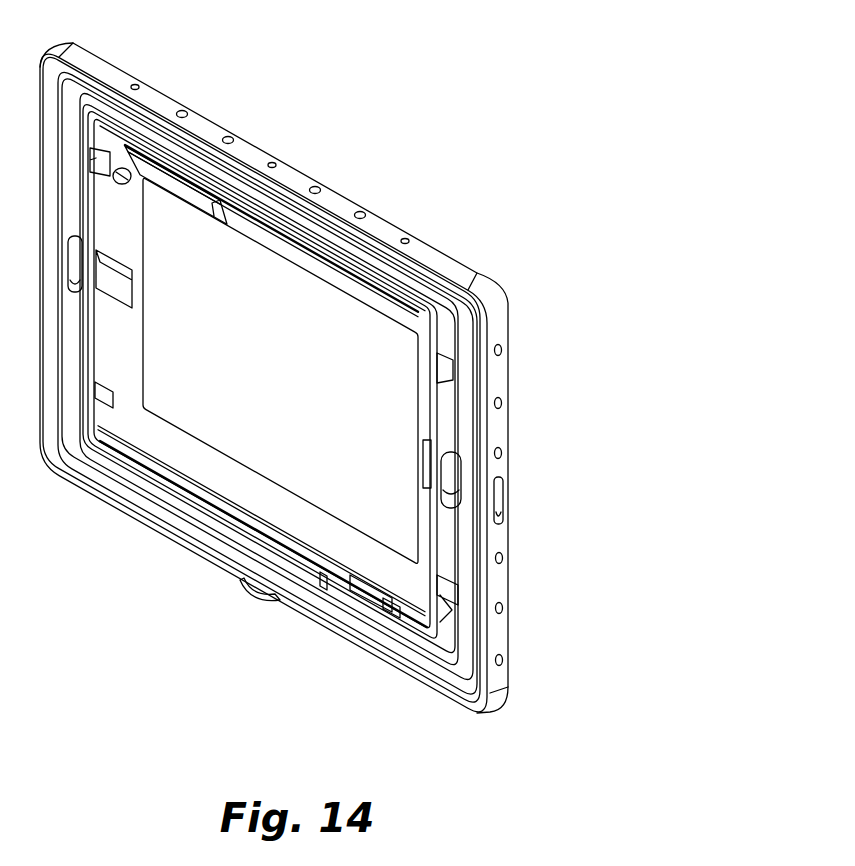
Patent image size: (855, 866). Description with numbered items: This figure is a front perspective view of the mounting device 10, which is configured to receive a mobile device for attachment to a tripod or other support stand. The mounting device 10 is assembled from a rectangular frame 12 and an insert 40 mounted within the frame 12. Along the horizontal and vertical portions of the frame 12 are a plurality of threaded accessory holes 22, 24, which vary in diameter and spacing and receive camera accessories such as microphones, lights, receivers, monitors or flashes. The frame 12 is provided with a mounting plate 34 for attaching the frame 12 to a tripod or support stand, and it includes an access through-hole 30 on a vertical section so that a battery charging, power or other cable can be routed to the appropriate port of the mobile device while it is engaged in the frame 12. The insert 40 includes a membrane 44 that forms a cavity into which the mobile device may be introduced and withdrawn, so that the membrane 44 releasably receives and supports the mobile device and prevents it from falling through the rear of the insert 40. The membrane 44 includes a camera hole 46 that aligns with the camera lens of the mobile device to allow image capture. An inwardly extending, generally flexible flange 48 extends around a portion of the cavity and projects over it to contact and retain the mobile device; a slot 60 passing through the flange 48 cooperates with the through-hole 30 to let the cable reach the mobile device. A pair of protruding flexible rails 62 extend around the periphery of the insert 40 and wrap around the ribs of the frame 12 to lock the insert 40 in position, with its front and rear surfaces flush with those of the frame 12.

The mounting device 10 is at (432, 130).
The frame 12 is at (425, 252).
The threaded accessory hole 22 is at (227, 136).
The threaded accessory hole 24 is at (134, 84).
The access through-hole 30 is at (500, 500).
The mounting plate 34 is at (252, 597).
The insert 40 is at (180, 460).
The membrane 44 is at (248, 381).
The camera hole 46 is at (133, 186).
The flange 48 is at (270, 228).
The slot 60 is at (450, 470).
The rail 62 is at (461, 320).